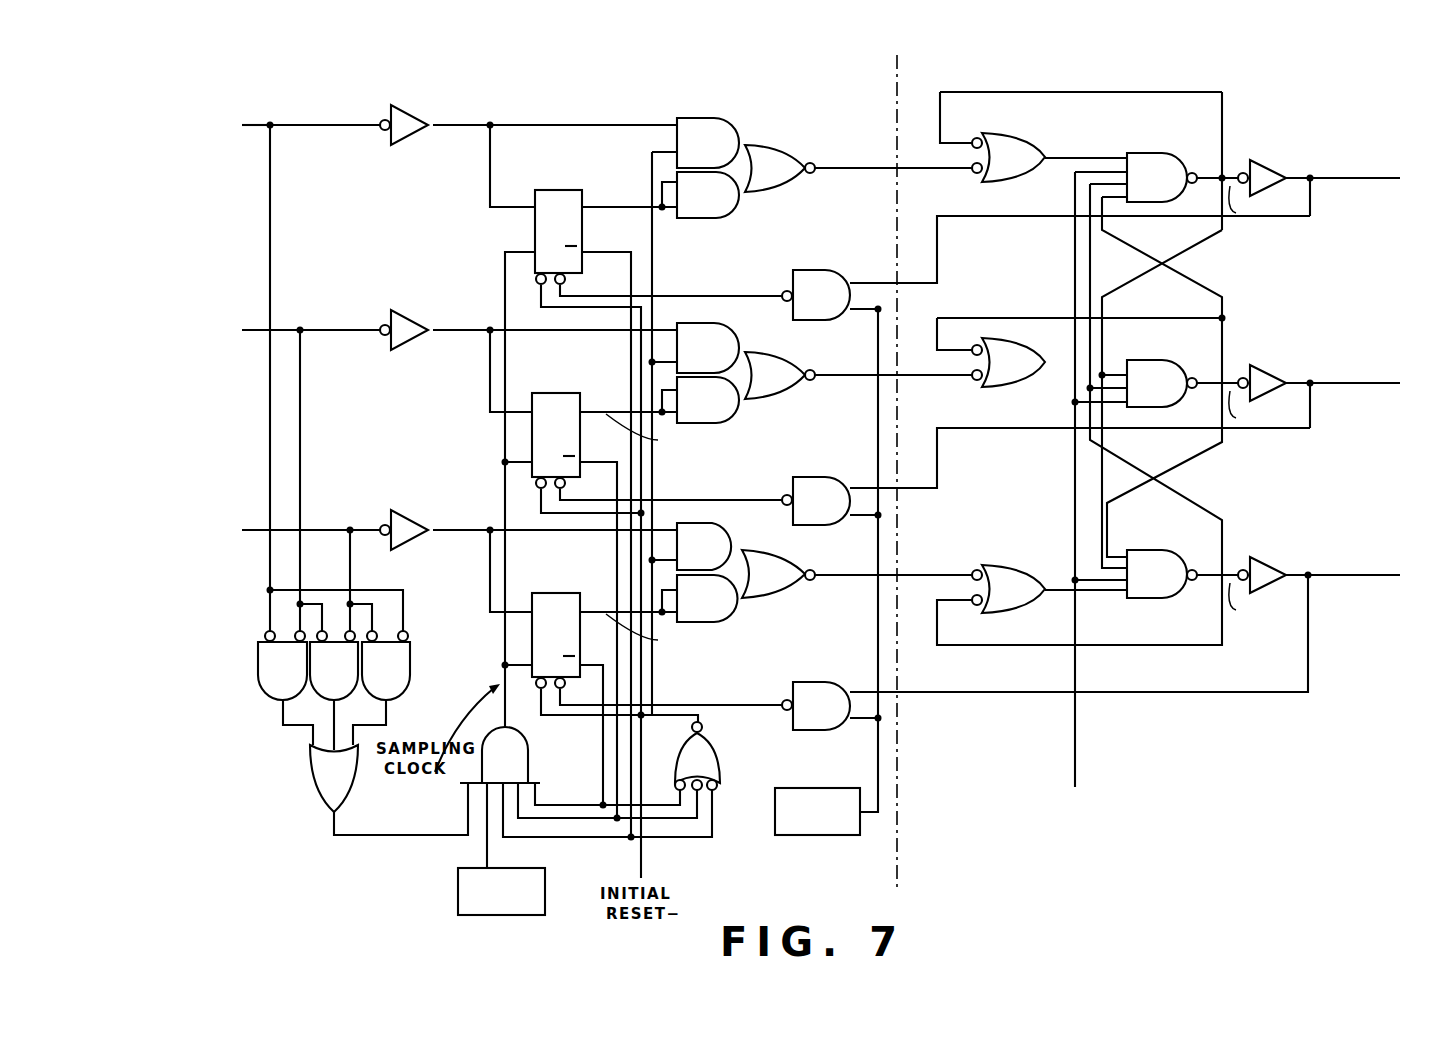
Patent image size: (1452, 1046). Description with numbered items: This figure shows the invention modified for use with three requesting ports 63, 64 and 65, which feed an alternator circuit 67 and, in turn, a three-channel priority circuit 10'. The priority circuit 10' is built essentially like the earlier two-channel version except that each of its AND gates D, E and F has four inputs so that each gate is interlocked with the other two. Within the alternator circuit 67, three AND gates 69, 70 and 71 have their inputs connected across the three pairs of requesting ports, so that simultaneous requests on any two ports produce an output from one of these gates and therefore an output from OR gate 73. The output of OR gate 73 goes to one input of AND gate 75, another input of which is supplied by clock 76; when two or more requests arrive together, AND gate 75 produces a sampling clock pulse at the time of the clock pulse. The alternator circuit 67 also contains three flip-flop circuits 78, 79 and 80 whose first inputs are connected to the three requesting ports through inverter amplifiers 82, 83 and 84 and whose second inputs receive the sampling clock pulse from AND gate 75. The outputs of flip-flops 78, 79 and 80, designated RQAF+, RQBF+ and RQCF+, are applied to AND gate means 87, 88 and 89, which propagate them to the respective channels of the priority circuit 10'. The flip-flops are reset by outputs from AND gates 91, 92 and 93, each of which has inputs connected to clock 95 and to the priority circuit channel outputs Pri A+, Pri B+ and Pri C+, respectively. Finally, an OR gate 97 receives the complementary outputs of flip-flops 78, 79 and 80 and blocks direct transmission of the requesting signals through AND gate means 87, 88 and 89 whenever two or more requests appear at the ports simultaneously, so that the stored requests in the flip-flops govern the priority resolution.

The three-channel priority circuit 10' is at (1168, 427).
The requesting port 63 is at (254, 121).
The requesting port 64 is at (252, 326).
The requesting port 65 is at (252, 527).
The alternator circuit 67 is at (533, 118).
The AND gate 69 is at (258, 662).
The AND gate 70 is at (320, 684).
The AND gate 71 is at (405, 672).
The OR gate 73 is at (318, 776).
The AND gate 75 is at (488, 758).
The clock 76 is at (457, 895).
The flip-flop circuit 78 is at (557, 189).
The flip-flop circuit 79 is at (557, 392).
The flip-flop circuit 80 is at (557, 592).
The inverter amplifier 82 is at (413, 114).
The inverter amplifier 83 is at (413, 319).
The inverter amplifier 84 is at (413, 519).
The AND gate means 87 is at (722, 118).
The AND gate means 88 is at (735, 341).
The AND gate means 89 is at (744, 543).
The AND gate 91 is at (826, 271).
The AND gate 92 is at (826, 479).
The AND gate 93 is at (830, 682).
The clock 95 is at (815, 789).
The OR gate 97 is at (722, 762).